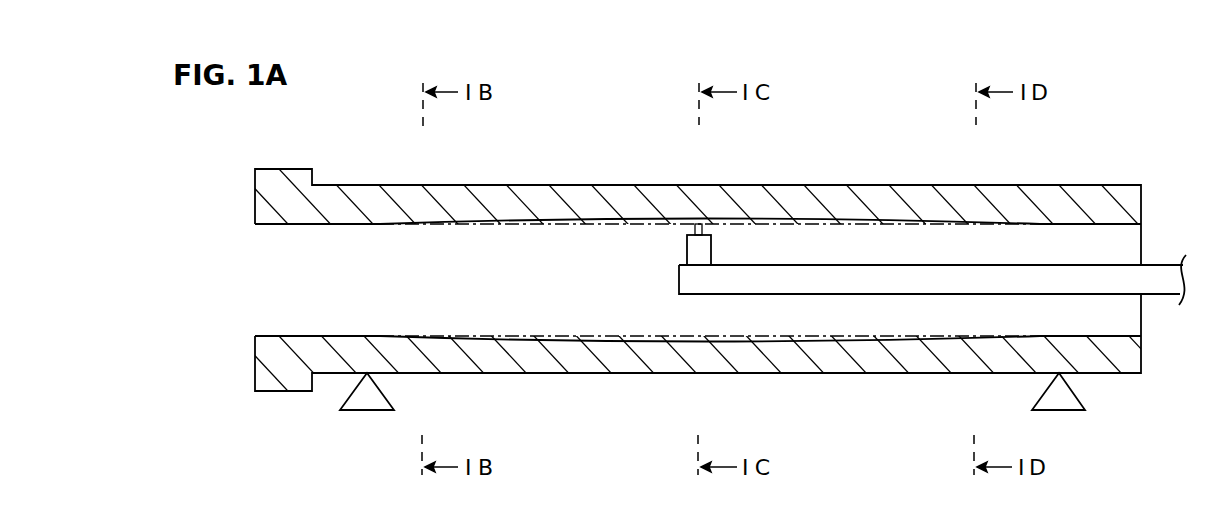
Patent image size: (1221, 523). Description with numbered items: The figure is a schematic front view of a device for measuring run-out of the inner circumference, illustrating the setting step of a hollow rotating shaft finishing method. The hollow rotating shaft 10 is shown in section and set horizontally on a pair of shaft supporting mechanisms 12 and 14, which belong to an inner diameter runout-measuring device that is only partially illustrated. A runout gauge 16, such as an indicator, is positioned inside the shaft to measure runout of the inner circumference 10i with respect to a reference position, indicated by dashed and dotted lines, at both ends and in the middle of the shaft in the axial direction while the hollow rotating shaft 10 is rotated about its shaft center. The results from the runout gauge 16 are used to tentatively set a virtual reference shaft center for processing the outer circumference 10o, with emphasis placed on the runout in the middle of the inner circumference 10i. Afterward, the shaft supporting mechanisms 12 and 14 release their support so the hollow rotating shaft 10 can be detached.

The hollow rotating shaft 10 is at (842, 184).
The outer circumference 10o is at (541, 184).
The inner circumference 10i is at (509, 335).
The shaft supporting mechanism 12 is at (361, 405).
The shaft supporting mechanism 14 is at (1070, 392).
The runout gauge 16 is at (688, 250).